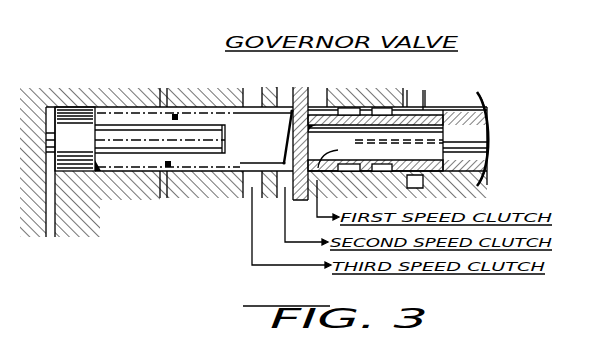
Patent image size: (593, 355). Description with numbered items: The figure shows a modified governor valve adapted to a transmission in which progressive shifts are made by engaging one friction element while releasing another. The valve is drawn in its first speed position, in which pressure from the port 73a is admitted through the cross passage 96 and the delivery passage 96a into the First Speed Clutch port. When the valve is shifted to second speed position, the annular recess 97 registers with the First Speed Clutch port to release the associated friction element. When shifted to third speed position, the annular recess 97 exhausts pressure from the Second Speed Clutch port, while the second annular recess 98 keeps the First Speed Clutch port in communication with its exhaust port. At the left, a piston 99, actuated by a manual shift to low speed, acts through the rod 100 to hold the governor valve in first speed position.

The piston 99 is at (86, 166).
The rod 100 is at (194, 143).
The cross passage 96 is at (435, 124).
The delivery passage 96a is at (338, 150).
The annular recess 97 is at (350, 109).
The second annular recess 98 is at (384, 109).
The port 73a is at (415, 98).